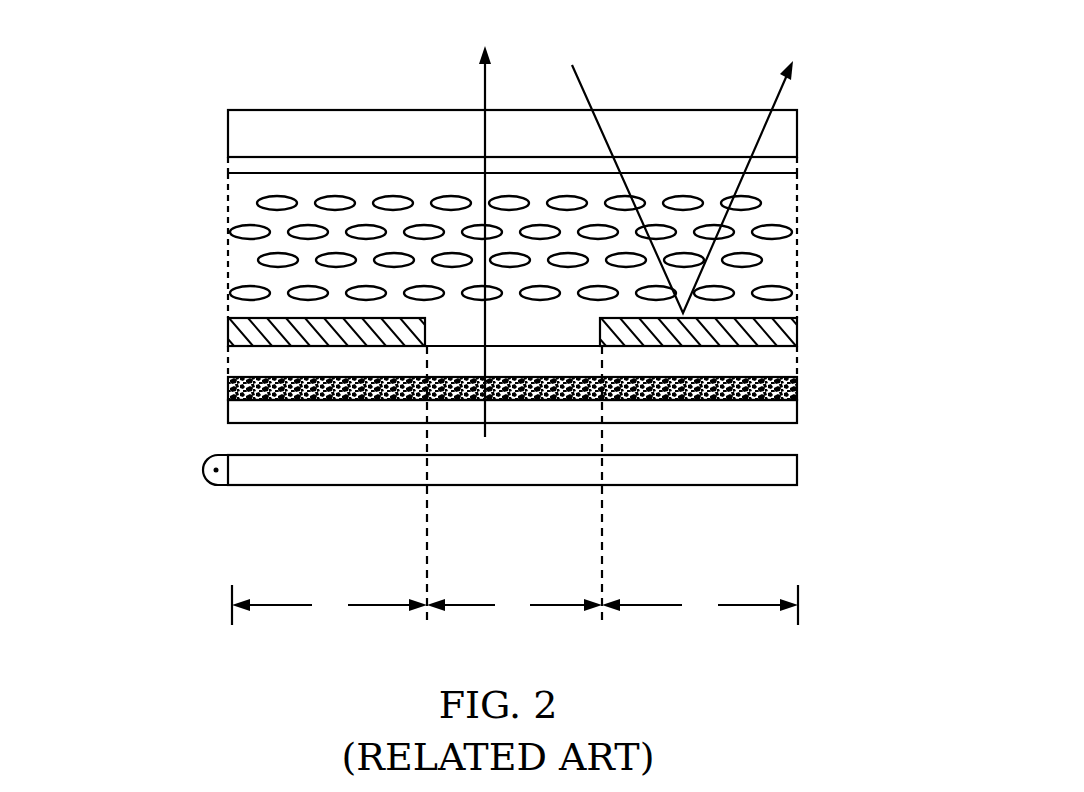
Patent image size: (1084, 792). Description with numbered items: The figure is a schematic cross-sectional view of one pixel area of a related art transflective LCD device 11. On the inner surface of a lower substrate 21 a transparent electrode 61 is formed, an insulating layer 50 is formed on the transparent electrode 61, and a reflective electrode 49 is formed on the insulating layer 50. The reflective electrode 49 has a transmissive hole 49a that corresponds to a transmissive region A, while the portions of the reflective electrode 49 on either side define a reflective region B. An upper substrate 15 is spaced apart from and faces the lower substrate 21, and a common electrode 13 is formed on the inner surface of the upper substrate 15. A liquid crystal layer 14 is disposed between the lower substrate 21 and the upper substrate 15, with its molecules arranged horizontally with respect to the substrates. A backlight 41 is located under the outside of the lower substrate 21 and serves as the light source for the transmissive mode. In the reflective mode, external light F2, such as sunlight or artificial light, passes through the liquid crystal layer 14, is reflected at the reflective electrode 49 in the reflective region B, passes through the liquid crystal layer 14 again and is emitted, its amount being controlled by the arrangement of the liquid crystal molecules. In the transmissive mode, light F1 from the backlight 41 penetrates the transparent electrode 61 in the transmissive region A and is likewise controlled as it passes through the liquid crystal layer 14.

The transflective LCD device 11 is at (190, 176).
The upper substrate 15 is at (784, 126).
The common electrode 13 is at (784, 163).
The liquid crystal layer 14 is at (763, 257).
The reflective electrode 49 is at (798, 323).
The transmissive hole 49a is at (520, 344).
The insulating layer 50 is at (238, 360).
The transparent electrode 61 is at (798, 384).
The lower substrate 21 is at (788, 411).
The backlight 41 is at (788, 470).
The light in transmissive mode F1 is at (483, 72).
The light in reflective mode F2 is at (580, 82).
The transmissive region A is at (514, 605).
The reflective region B is at (515, 605).